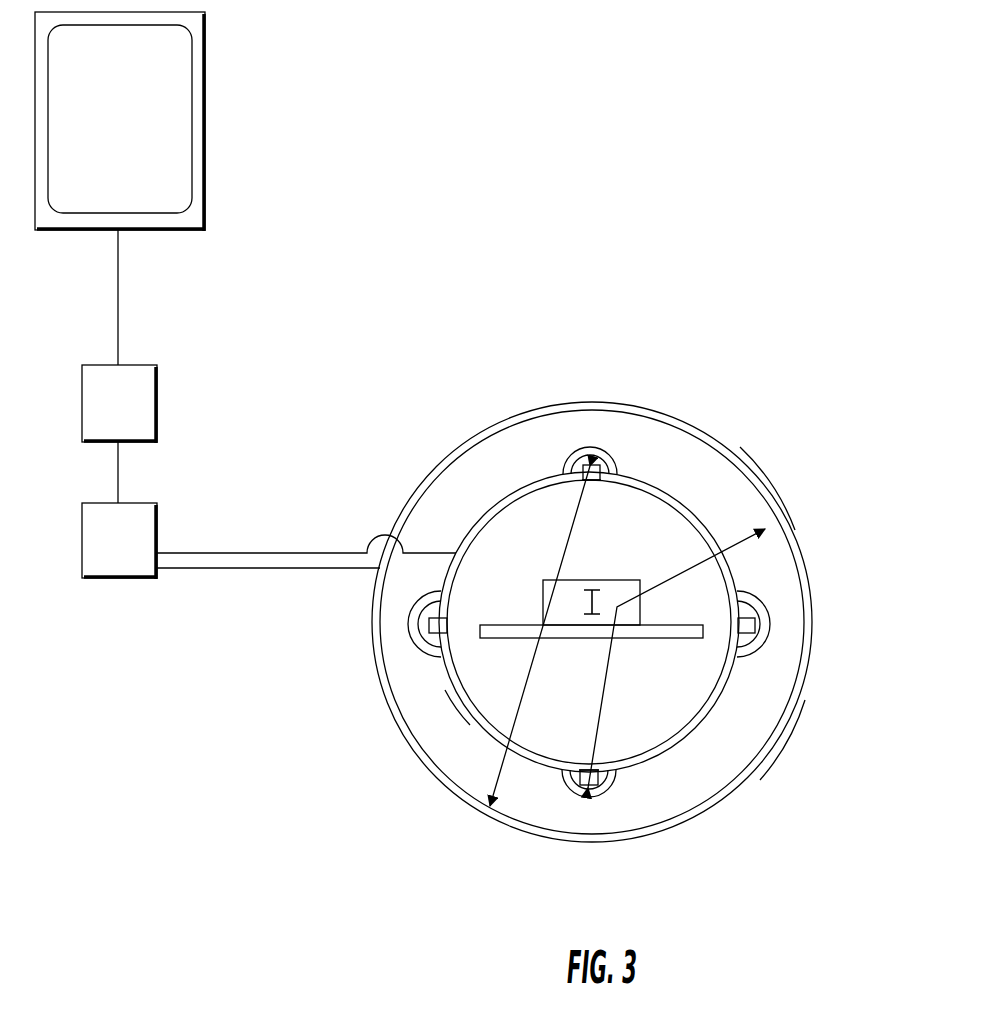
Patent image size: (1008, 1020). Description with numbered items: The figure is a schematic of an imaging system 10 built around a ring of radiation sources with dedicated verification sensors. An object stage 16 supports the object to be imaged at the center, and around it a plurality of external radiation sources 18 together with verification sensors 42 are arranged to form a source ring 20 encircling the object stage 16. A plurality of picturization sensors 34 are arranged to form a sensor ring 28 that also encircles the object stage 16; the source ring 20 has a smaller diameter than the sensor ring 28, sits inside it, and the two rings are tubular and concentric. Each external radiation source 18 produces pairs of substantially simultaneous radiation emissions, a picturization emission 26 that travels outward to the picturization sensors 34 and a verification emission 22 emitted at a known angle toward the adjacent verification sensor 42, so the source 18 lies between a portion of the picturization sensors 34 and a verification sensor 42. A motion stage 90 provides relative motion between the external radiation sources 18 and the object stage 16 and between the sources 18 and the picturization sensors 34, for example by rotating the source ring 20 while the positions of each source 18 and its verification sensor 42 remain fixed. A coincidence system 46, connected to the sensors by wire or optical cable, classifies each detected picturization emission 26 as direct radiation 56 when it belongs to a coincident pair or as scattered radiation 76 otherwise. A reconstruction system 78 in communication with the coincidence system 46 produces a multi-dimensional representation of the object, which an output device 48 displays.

The imaging system 10 is at (377, 337).
The object stage 16 is at (455, 608).
The external radiation source 18 is at (566, 476).
The source ring 20 is at (721, 445).
The verification emission 22 is at (596, 462).
The picturization emission 26 is at (690, 503).
The sensor ring 28 is at (789, 728).
The picturization sensor 34 is at (765, 484).
The verification sensor 42 is at (582, 469).
The coincidence system 46 is at (119, 541).
The output device 48 is at (120, 121).
The direct radiation 56 is at (517, 720).
The scattered radiation 76 is at (703, 568).
The reconstruction system 78 is at (119, 404).
The motion stage 90 is at (445, 678).